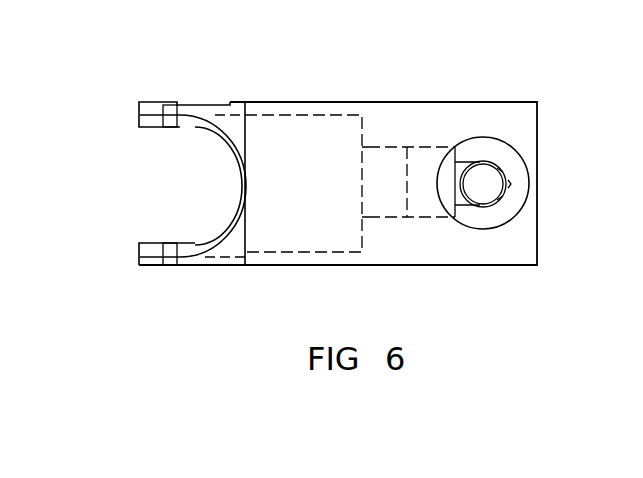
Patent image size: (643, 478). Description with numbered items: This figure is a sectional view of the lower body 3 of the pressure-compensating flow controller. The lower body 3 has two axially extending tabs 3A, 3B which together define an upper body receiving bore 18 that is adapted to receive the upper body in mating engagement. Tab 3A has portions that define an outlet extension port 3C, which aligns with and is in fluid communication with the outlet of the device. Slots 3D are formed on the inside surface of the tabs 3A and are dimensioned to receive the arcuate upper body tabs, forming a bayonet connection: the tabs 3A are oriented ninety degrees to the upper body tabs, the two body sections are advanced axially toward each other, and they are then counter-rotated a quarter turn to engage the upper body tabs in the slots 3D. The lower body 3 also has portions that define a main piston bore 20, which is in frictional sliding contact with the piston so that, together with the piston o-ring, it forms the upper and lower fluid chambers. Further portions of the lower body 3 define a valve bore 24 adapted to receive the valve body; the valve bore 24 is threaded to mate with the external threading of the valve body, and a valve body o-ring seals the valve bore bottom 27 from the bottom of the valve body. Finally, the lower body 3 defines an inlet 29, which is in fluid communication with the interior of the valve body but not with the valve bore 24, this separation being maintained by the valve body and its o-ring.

The lower body 3 is at (452, 283).
The tab 3A is at (152, 102).
The tab 3B is at (280, 265).
The outlet extension port 3C is at (210, 105).
The slots 3D is at (170, 127).
The upper body receiving bore 18 is at (213, 186).
The main piston bore 20 is at (292, 138).
The valve bore 24 is at (422, 163).
The valve bore bottom 27 is at (455, 152).
The inlet 29 is at (487, 187).